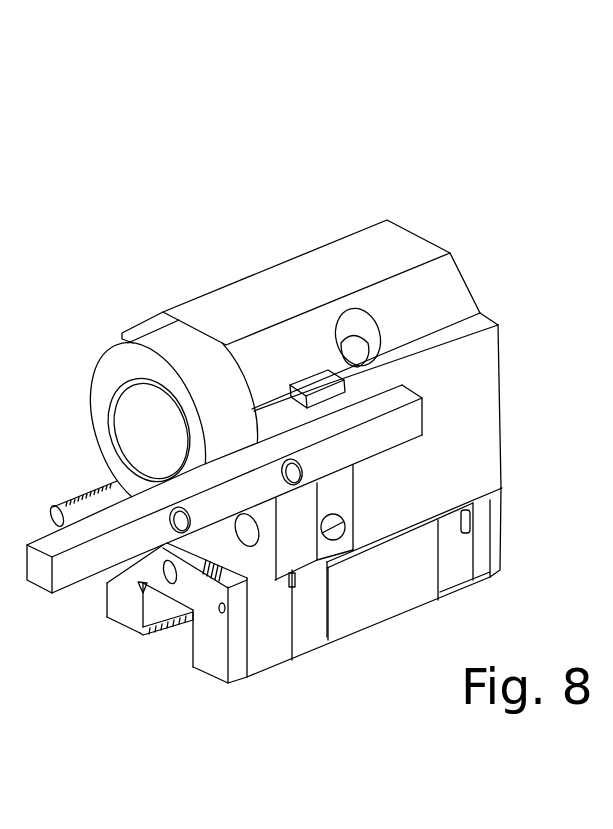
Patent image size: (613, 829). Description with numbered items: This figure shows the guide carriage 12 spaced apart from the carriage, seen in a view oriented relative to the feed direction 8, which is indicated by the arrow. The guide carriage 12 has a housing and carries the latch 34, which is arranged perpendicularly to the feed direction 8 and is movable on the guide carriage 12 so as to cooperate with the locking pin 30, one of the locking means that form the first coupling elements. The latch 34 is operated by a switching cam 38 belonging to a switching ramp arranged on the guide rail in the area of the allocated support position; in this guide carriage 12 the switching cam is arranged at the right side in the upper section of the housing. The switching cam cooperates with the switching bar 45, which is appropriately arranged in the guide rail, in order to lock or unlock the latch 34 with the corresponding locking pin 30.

The feed direction 8 is at (180, 36).
The guide carriage 12 is at (280, 255).
The switching cam 38 is at (318, 395).
The locking pin 30 is at (73, 506).
The switching bar 45 is at (352, 445).
The latch 34 is at (337, 492).